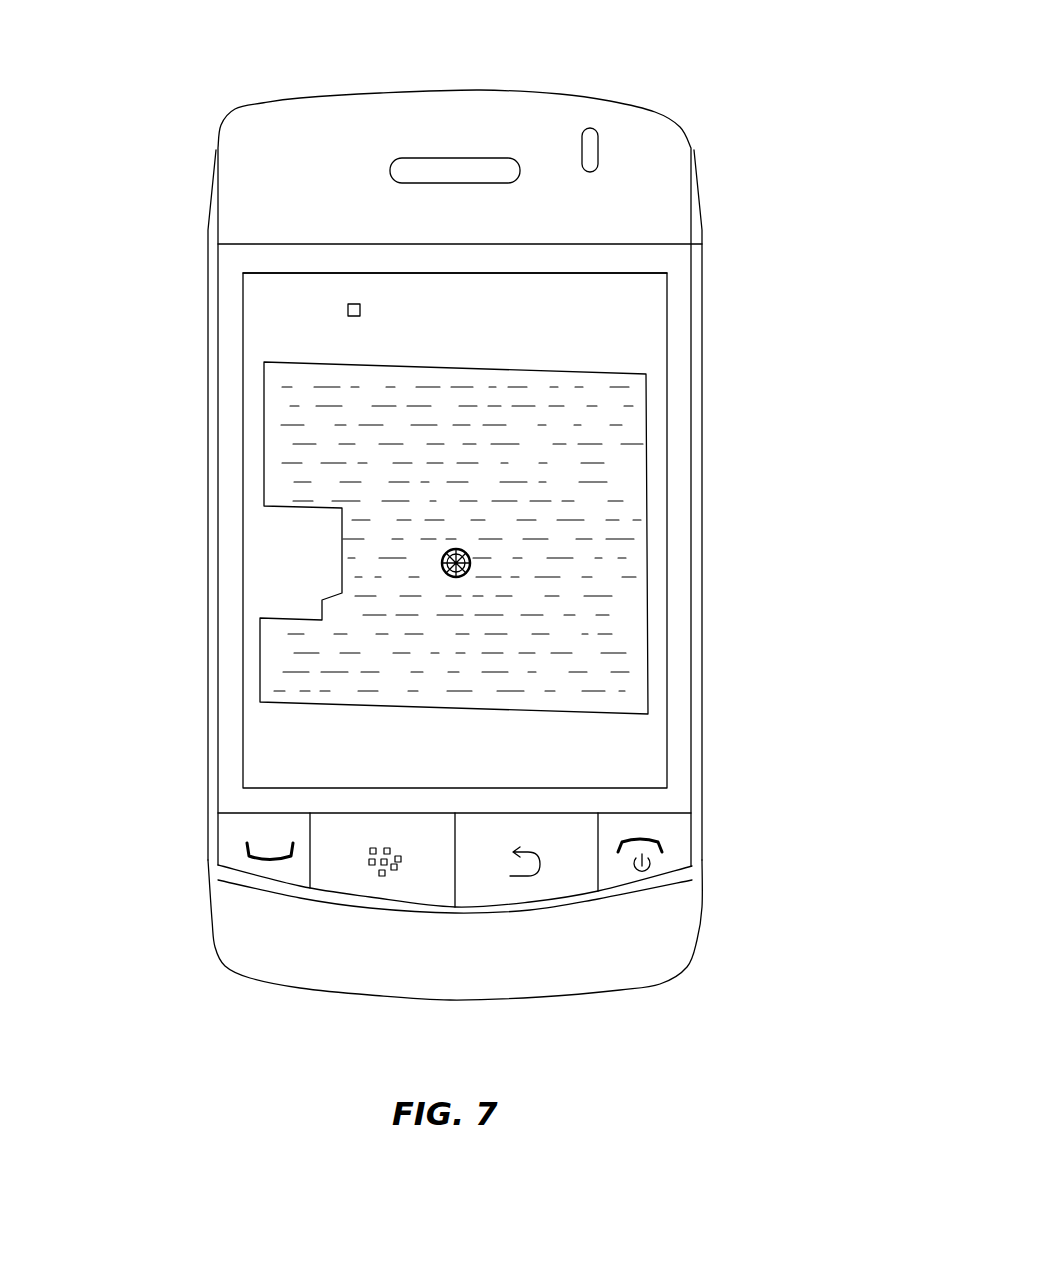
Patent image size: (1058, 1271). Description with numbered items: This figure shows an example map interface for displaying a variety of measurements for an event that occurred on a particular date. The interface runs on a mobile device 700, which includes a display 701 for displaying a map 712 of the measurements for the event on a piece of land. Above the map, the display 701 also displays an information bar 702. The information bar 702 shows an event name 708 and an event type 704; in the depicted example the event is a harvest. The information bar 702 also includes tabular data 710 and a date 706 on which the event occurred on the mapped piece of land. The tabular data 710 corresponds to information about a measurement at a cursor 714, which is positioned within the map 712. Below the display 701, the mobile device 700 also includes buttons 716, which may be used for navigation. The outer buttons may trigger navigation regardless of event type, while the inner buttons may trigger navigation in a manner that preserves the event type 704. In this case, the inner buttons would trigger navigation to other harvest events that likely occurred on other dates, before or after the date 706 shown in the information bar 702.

The mobile device 700 is at (636, 131).
The display 701 is at (285, 543).
The information bar 702 is at (400, 278).
The event type 704 is at (546, 288).
The date 706 is at (560, 307).
The event name 708 is at (375, 286).
The tabular data 710 is at (340, 311).
The map 712 is at (310, 424).
The cursor 714 is at (472, 563).
The buttons 716 is at (623, 877).